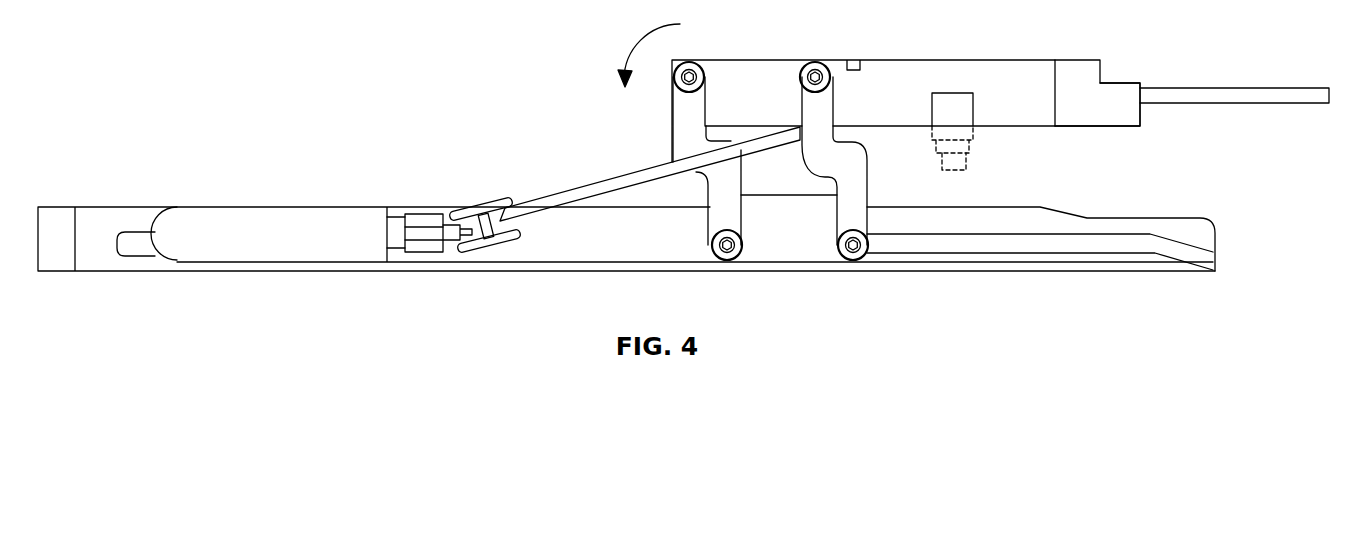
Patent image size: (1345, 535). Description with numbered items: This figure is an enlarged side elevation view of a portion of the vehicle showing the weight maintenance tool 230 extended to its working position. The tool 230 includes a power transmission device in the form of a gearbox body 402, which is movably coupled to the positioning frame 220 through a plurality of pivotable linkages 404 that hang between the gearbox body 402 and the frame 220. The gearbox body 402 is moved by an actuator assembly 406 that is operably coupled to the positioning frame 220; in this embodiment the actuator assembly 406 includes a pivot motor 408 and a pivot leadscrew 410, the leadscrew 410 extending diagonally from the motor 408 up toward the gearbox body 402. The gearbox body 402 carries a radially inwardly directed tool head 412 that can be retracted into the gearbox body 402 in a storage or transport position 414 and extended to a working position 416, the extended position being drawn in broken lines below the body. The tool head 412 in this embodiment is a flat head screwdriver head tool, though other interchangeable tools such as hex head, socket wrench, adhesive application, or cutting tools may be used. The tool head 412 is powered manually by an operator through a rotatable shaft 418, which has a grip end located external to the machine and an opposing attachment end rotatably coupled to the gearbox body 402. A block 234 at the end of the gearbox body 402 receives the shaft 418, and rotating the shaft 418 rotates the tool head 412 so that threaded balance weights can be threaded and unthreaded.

The gearbox body 402 is at (752, 78).
The pivotable linkages 404 is at (710, 230).
The actuator assembly 406 is at (409, 285).
The pivot motor 408 is at (223, 218).
The pivot leadscrew 410 is at (633, 173).
The tool head 412 is at (947, 108).
The storage or transport position 414 is at (982, 131).
The working position 416 is at (971, 166).
The positioning frame 220 is at (1007, 272).
The weight maintenance tool 230 is at (958, 61).
The connector block 234 is at (1119, 95).
The rotatable shaft 418 is at (1220, 87).